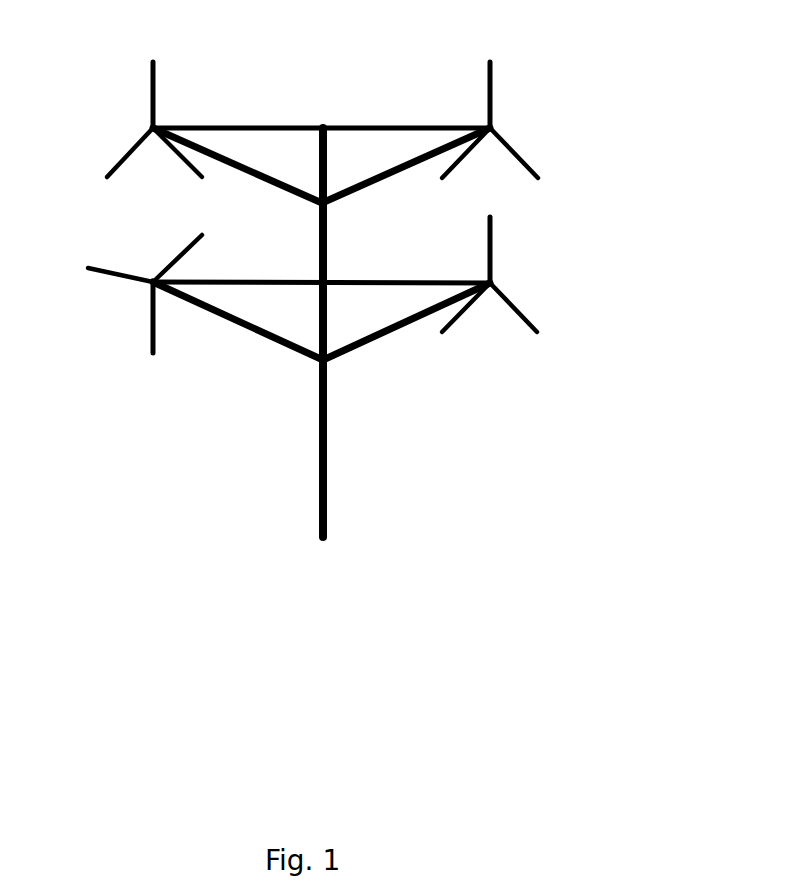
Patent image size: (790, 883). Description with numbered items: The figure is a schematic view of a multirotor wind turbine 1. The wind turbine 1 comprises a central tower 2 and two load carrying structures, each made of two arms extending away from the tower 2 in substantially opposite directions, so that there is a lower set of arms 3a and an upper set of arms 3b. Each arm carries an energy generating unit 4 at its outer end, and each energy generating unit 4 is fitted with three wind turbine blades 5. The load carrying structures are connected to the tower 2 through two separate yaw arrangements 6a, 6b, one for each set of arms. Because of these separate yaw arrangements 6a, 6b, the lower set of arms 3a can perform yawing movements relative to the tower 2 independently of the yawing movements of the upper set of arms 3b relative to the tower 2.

The multirotor wind turbine 1 is at (620, 190).
The tower 2 is at (323, 470).
The lower set of arms 3a is at (250, 330).
The upper set of arms 3b is at (220, 163).
The energy generating unit 4 is at (145, 125).
The wind turbine blade 5 is at (155, 80).
The yaw arrangement 6a is at (316, 361).
The yaw arrangement 6b is at (327, 207).